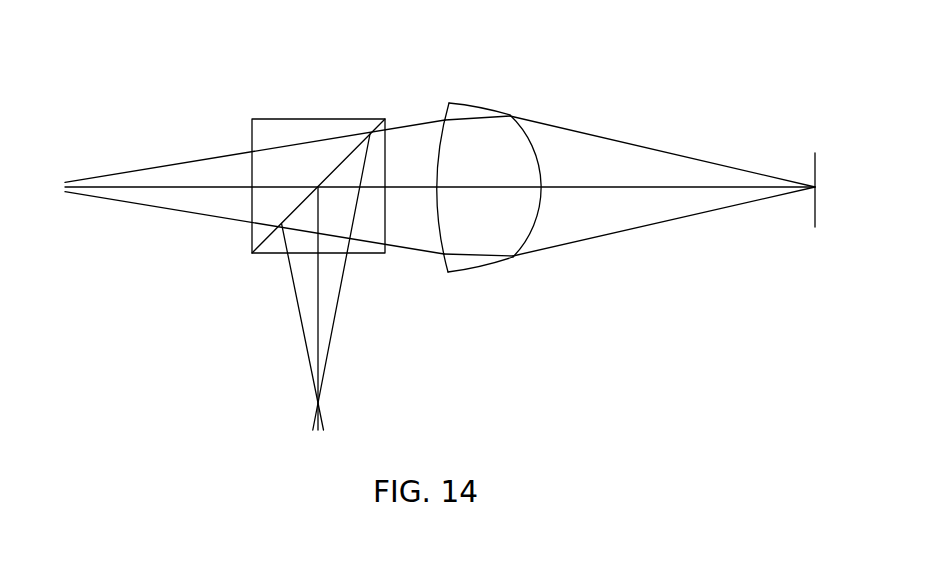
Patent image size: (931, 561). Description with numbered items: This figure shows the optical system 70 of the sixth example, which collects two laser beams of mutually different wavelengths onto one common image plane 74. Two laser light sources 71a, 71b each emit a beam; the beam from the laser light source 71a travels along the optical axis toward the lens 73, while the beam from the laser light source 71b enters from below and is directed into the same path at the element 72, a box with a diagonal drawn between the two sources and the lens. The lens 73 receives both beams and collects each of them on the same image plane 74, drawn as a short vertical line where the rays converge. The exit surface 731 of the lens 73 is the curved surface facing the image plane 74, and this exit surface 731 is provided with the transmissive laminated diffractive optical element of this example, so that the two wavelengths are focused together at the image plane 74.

The optical system 70 is at (445, 216).
The laser light source 71a is at (255, 187).
The laser light source 71b is at (313, 282).
The beam splitter 72 is at (318, 167).
The lens 73 is at (471, 240).
The exit surface 731 is at (537, 238).
The image plane 74 is at (667, 189).